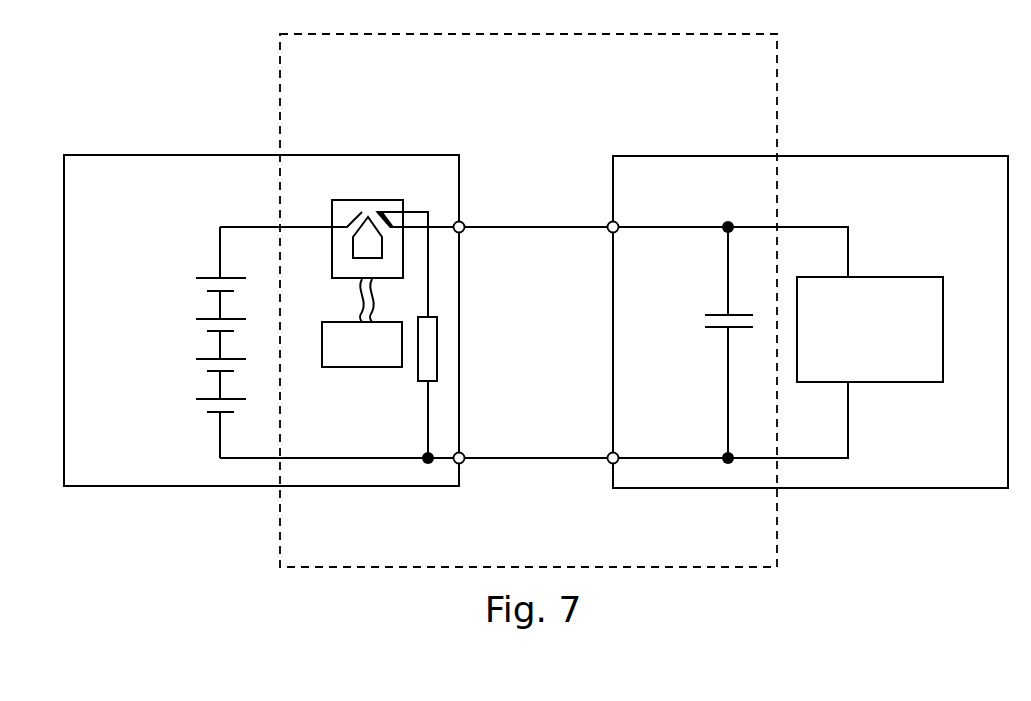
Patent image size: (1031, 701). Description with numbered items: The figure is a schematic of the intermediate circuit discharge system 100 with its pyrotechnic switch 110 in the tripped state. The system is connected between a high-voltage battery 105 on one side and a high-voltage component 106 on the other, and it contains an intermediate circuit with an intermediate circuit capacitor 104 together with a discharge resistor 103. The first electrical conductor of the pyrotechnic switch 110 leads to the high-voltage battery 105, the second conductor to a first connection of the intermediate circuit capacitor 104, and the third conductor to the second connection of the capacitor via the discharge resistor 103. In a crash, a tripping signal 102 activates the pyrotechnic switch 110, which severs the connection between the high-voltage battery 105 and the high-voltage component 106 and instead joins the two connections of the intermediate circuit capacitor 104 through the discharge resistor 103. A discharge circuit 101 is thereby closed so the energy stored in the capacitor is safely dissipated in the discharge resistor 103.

The intermediate circuit discharge system 100 is at (528, 287).
The discharge circuit 101 is at (438, 260).
The tripping signal 102 is at (362, 344).
The discharge resistor 103 is at (438, 382).
The intermediate circuit capacitor 104 is at (710, 335).
The high-voltage battery 105 is at (186, 310).
The high-voltage component 106 is at (870, 329).
The pyrotechnic switch 110 is at (380, 195).